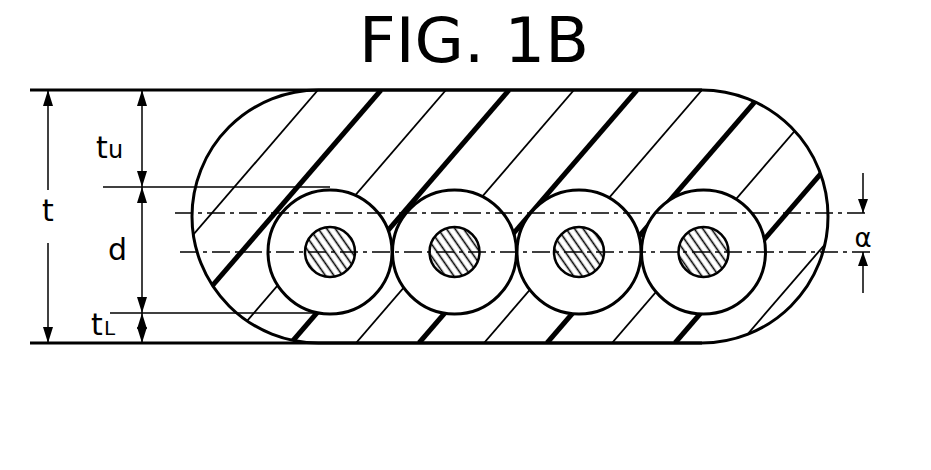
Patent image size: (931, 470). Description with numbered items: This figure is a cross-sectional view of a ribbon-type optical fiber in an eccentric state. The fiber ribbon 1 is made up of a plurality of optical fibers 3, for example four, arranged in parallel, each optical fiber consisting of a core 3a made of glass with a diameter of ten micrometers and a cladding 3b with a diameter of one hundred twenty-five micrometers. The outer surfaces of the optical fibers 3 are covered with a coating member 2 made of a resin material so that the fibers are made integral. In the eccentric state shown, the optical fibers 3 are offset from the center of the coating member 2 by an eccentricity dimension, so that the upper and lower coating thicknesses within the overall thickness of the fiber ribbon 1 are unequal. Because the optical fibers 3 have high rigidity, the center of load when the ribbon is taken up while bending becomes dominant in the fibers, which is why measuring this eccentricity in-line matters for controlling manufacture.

The fiber ribbon 1 is at (752, 338).
The coating member 2 is at (768, 131).
The optical fibers 3 is at (517, 316).
The core 3a is at (568, 280).
The cladding 3b is at (590, 308).